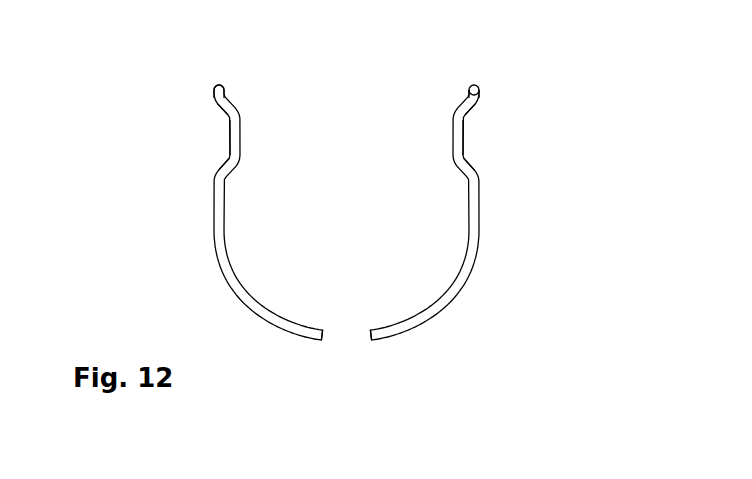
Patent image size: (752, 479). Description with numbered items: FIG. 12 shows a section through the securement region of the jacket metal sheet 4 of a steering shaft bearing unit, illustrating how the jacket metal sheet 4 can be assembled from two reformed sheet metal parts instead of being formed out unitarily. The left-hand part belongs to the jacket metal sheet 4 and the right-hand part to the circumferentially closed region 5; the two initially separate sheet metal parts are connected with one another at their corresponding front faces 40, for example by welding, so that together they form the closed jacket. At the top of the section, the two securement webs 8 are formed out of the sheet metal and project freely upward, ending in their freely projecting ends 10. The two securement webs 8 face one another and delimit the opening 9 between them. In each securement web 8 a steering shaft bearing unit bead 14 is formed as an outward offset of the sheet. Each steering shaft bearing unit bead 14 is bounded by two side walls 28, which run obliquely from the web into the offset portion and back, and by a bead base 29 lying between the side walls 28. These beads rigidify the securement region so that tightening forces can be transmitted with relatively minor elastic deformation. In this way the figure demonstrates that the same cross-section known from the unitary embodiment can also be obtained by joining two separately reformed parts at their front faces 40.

The jacket metal sheet 4 is at (270, 331).
The circumferentially closed region 5 is at (451, 312).
The securement web 8 is at (213, 102).
The opening 9 is at (366, 145).
The freely projecting end 10 is at (222, 84).
The steering shaft bearing unit bead 14 is at (128, 151).
The side wall 28 is at (228, 116).
The bead base 29 is at (229, 136).
The front faces 40 is at (369, 339).